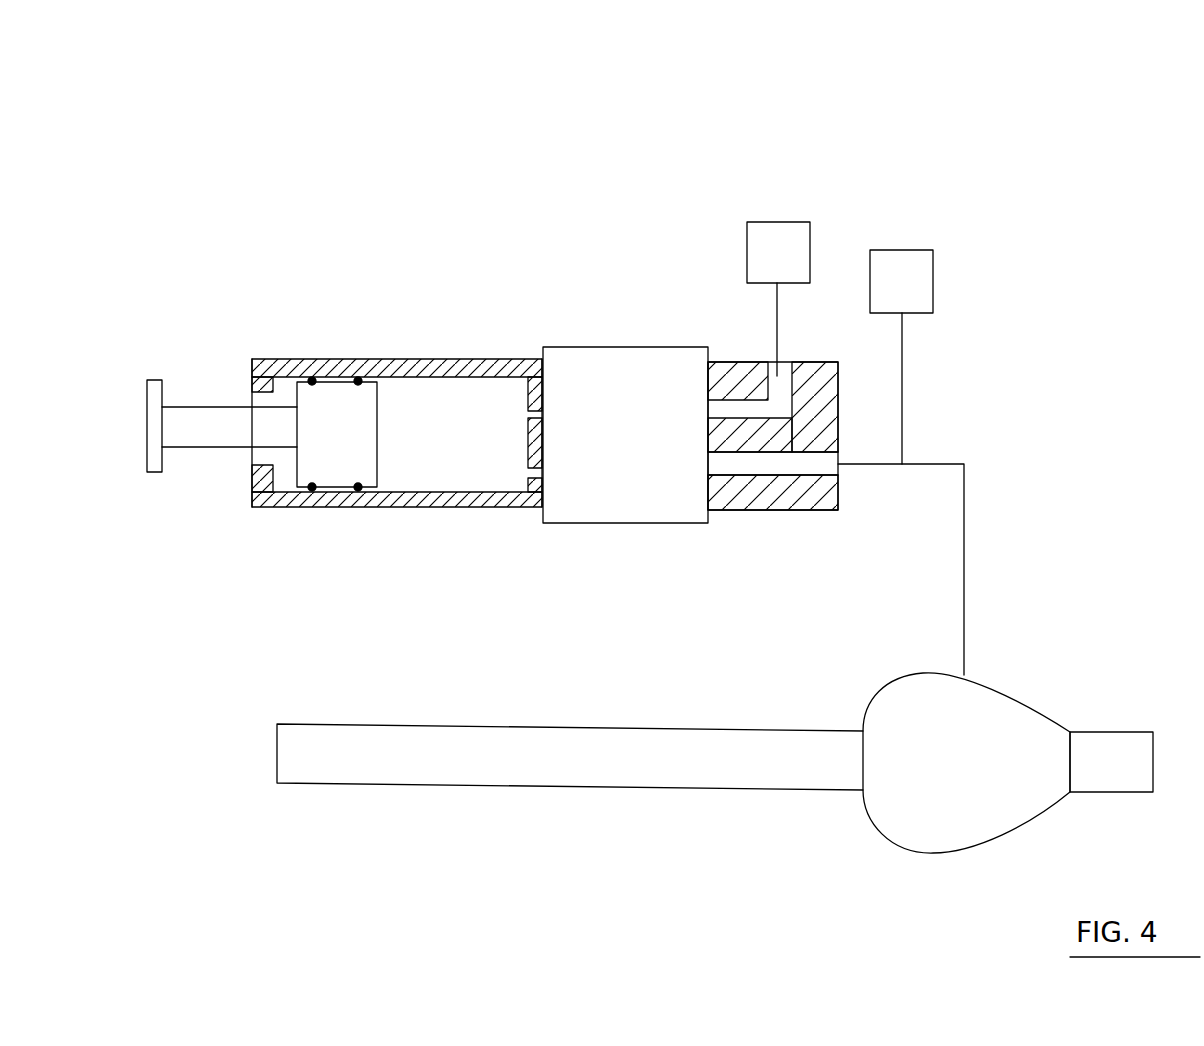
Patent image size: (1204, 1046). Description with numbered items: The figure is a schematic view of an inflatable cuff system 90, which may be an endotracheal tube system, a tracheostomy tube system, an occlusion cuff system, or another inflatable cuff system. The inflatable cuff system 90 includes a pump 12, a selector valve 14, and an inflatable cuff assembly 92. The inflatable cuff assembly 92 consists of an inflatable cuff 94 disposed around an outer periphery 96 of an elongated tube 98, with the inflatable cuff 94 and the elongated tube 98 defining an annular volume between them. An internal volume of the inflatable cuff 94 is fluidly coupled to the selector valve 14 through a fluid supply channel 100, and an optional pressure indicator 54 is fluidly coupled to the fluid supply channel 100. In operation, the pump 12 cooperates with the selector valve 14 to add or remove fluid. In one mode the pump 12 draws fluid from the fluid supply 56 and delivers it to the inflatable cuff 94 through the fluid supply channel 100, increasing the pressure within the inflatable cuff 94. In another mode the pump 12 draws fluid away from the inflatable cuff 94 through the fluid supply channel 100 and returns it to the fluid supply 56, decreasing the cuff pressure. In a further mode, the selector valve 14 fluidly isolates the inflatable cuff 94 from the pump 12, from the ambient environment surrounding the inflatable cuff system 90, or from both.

The inflatable cuff system 90 is at (984, 102).
The pump 12 is at (310, 270).
The selector valve 14 is at (616, 343).
The pressure indicator 54 is at (901, 357).
The fluid supply 56 is at (778, 299).
The inflatable cuff assembly 92 is at (338, 641).
The inflatable cuff 94 is at (1025, 700).
The outer periphery 96 is at (688, 791).
The elongated tube 98 is at (535, 755).
The fluid supply channel 100 is at (966, 598).